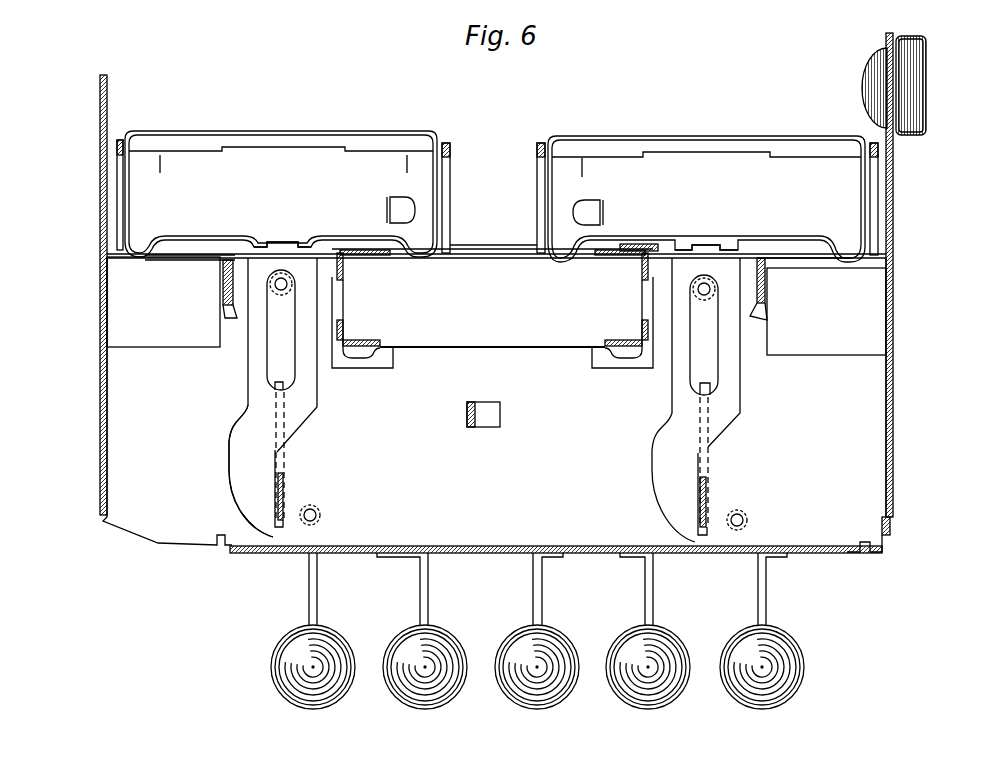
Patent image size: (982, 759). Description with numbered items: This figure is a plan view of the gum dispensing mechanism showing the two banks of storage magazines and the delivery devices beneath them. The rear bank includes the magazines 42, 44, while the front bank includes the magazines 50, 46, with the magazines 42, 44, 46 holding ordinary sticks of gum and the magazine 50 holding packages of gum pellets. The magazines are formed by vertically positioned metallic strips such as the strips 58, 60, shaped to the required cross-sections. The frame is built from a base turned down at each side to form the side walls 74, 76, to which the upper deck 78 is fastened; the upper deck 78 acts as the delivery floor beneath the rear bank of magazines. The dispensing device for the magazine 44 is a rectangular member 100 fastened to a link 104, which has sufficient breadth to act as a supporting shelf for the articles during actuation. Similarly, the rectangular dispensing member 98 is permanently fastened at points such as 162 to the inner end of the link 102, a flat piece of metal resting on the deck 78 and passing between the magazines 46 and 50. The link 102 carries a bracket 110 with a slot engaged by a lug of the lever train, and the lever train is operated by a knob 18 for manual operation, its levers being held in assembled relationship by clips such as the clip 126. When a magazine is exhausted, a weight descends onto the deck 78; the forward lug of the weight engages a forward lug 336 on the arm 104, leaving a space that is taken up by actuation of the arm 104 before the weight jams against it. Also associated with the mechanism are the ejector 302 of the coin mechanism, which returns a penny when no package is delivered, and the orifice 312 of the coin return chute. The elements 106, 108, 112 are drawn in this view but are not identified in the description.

The knob 18 is at (528, 702).
The magazine 42 is at (262, 172).
The magazine 44 is at (680, 177).
The magazine 46 is at (515, 333).
The magazine 50 is at (144, 340).
The metallic strip 58 is at (355, 352).
The metallic strip 60 is at (636, 352).
The side wall 74 is at (100, 305).
The side wall 76 is at (893, 325).
The upper deck 78 is at (136, 528).
The rectangular dispensing member 98 is at (143, 133).
The rectangular member 100 is at (594, 137).
The link 102 is at (240, 490).
The link 104 is at (665, 458).
The slot 106 is at (271, 340).
The pivot pin 108 is at (293, 289).
The bracket 110 is at (284, 484).
The latch member 112 is at (285, 456).
The clip 126 is at (258, 548).
The fastening points 162 is at (320, 243).
The ejector 302 is at (632, 243).
The coin return chute orifice 312 is at (928, 88).
The forward lug 336 is at (708, 245).